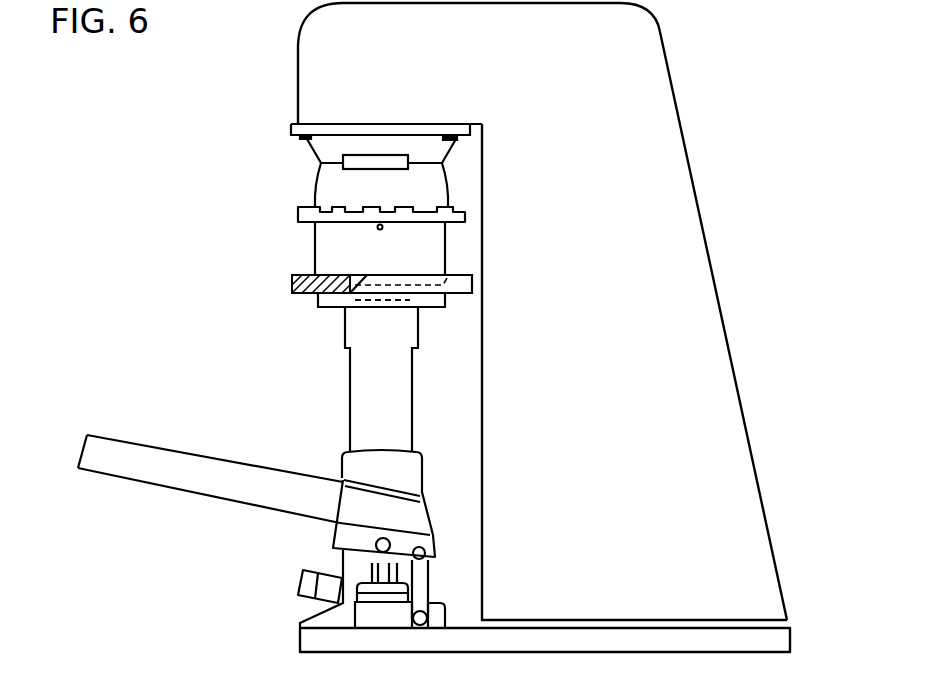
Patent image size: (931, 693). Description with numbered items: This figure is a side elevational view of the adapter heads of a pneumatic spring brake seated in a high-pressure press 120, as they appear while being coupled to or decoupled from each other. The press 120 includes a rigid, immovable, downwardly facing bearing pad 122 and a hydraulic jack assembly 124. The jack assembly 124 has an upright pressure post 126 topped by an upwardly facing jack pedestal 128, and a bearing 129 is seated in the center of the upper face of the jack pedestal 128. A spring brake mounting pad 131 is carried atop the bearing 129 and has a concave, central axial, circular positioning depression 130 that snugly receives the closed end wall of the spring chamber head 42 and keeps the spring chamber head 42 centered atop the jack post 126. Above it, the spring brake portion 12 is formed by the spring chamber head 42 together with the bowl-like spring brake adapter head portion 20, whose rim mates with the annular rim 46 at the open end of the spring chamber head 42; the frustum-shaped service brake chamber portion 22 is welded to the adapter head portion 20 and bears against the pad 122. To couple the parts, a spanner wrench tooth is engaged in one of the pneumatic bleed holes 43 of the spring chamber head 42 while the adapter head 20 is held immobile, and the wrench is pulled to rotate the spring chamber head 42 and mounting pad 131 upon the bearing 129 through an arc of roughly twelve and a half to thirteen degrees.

The spring brake portion 12 is at (266, 176).
The spring brake adapter head portion 20 is at (306, 173).
The service brake chamber portion 22 is at (437, 145).
The spring chamber head 42 is at (457, 242).
The pneumatic bleed holes 43 is at (377, 228).
The annular rim 46 is at (462, 217).
The high-pressure press 120 is at (708, 189).
The bearing pad 122 is at (313, 64).
The hydraulic jack assembly 124 is at (202, 516).
The pressure post 126 is at (398, 410).
The jack pedestal 128 is at (317, 300).
The bearing 129 is at (377, 300).
The positioning depression 130 is at (325, 276).
The spring brake mounting pad 131 is at (292, 283).